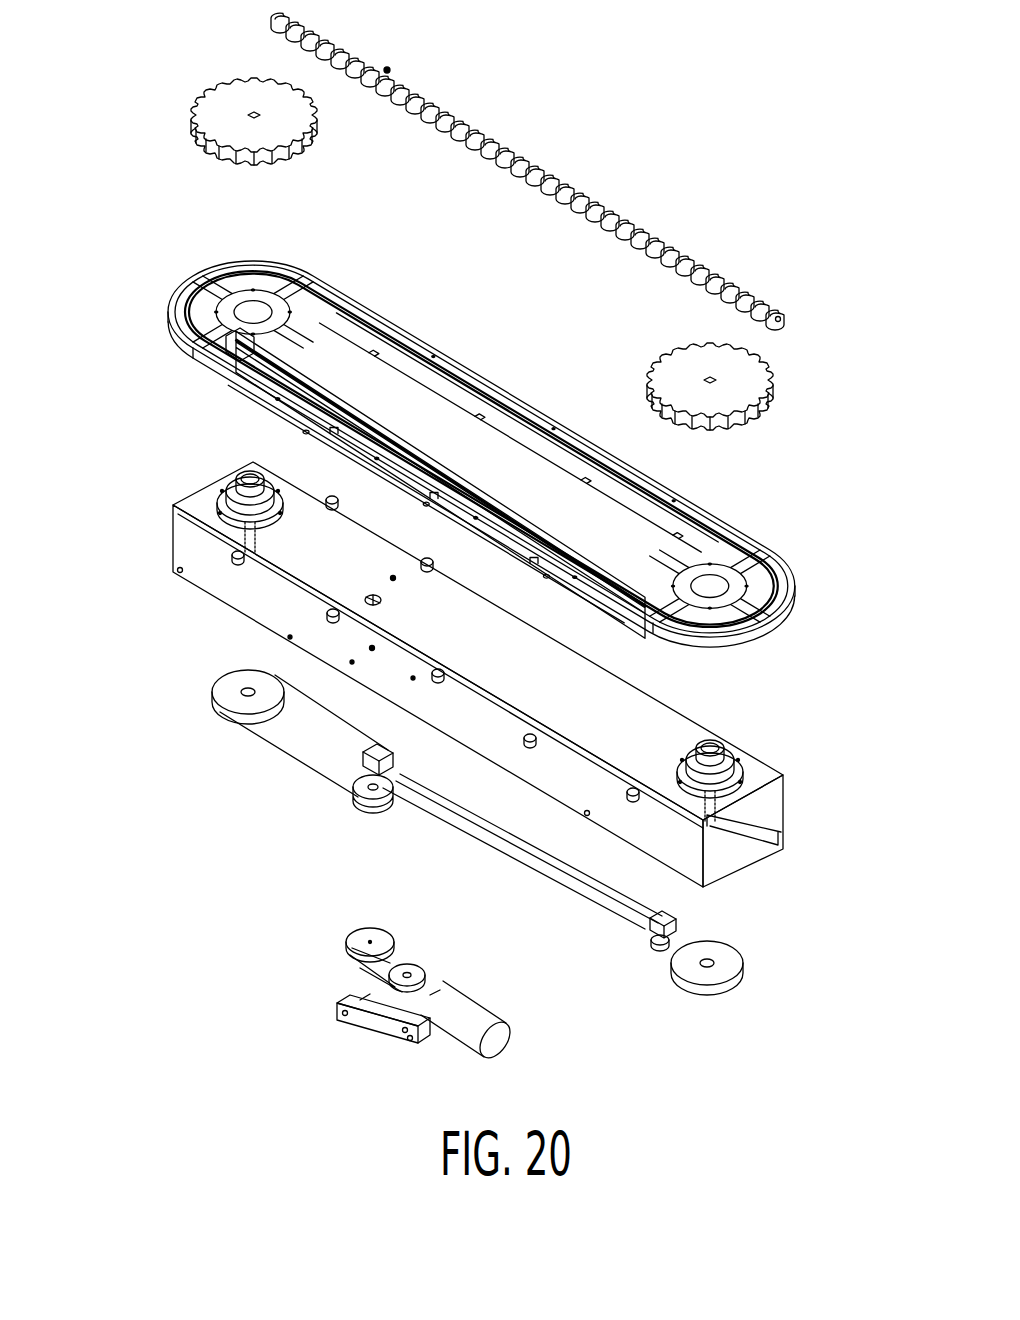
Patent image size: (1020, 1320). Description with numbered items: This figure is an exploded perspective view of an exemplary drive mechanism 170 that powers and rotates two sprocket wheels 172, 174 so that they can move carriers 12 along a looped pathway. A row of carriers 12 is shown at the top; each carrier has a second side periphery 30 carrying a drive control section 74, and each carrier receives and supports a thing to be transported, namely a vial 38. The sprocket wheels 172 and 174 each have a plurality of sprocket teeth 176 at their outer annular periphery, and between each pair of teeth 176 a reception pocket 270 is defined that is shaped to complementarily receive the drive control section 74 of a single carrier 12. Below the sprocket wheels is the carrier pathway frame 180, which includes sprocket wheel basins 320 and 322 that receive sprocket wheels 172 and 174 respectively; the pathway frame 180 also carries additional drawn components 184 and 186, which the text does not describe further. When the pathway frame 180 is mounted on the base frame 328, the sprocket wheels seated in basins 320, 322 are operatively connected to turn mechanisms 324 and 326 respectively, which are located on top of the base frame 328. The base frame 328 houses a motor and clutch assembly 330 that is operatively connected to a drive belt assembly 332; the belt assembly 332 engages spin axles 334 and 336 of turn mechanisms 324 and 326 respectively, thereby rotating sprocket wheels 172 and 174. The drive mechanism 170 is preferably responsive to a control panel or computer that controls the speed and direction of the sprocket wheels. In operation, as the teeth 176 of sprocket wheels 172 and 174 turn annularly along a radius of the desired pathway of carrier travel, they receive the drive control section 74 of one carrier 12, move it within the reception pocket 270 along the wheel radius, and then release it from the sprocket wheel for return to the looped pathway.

The carrier 12 is at (340, 46).
The vial 38 is at (392, 70).
The drive control section 74 is at (450, 134).
The second side periphery 30 is at (490, 165).
The sprocket wheel 172 is at (222, 117).
The sprocket wheel 174 is at (737, 390).
The reception pocket 270 is at (210, 140).
The sprocket teeth 176 is at (256, 162).
The carrier pathway frame 180 is at (518, 392).
The track rim 184 is at (220, 272).
The guide rail 186 is at (252, 363).
The sprocket wheel basin 320 is at (300, 278).
The sprocket wheel basin 322 is at (690, 570).
The turn mechanism 324 is at (242, 487).
The turn mechanism 326 is at (727, 760).
The spin axle 334 is at (172, 566).
The base frame 328 is at (533, 667).
The spin axle 336 is at (730, 828).
The drive belt assembly 332 is at (277, 760).
The drive mechanism 170 is at (315, 892).
The motor and clutch assembly 330 is at (450, 978).